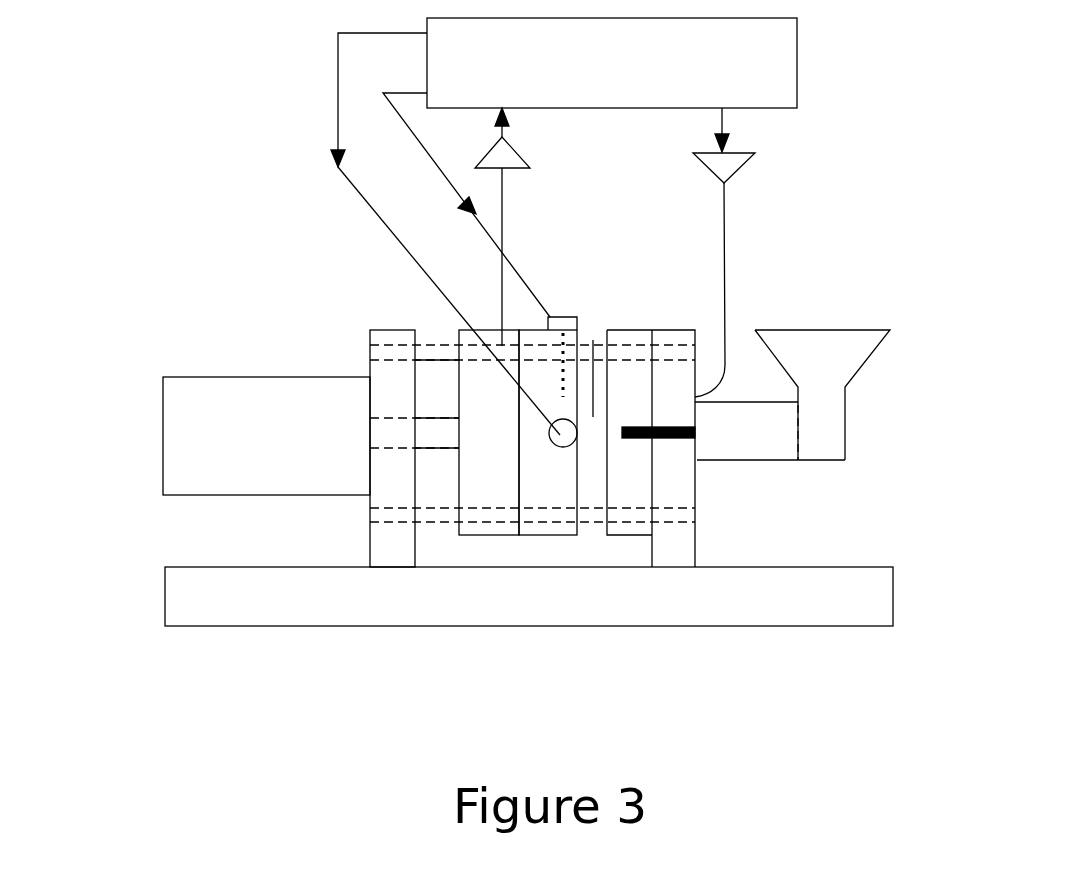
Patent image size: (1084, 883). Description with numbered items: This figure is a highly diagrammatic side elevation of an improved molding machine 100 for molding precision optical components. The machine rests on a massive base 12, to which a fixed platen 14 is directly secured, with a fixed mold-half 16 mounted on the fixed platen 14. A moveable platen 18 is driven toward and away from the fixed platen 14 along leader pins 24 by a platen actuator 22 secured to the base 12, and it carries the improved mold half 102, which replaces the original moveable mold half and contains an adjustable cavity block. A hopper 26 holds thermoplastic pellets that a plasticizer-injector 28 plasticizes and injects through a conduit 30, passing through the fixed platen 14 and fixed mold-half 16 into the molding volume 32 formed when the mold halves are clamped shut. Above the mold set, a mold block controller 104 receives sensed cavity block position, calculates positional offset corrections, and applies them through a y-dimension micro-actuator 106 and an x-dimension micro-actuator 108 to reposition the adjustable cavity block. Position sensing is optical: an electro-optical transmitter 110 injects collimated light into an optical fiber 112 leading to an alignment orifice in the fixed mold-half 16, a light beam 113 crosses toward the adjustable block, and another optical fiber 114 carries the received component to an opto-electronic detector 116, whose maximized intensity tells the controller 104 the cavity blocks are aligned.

The base 12 is at (847, 626).
The fixed platen 14 is at (682, 330).
The fixed mold-half 16 is at (637, 330).
The moveable platen 18 is at (483, 330).
The platen actuator 22 is at (220, 387).
The leader pins 24 is at (437, 345).
The hopper 26 is at (832, 360).
The plasticizer-injector 28 is at (763, 440).
The conduit 30 is at (672, 442).
The molding volume 32 is at (618, 430).
The molding machine 100 is at (255, 679).
The improved mold half 102 is at (583, 337).
The mold block controller 104 is at (790, 93).
The y-dimension electromechanical micro-actuator 106 is at (568, 315).
The x-dimension micro-actuator 108 is at (556, 440).
The electro-optical transmitter 110 is at (722, 170).
The optical fiber 112 is at (727, 317).
The light beam 113 is at (597, 343).
The optical fiber 114 is at (542, 233).
The opto-electronic detector 116 is at (505, 162).